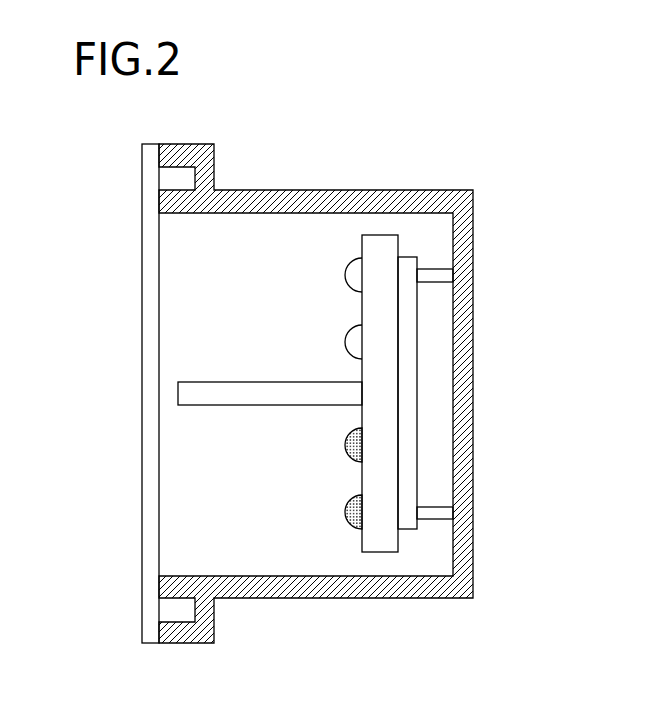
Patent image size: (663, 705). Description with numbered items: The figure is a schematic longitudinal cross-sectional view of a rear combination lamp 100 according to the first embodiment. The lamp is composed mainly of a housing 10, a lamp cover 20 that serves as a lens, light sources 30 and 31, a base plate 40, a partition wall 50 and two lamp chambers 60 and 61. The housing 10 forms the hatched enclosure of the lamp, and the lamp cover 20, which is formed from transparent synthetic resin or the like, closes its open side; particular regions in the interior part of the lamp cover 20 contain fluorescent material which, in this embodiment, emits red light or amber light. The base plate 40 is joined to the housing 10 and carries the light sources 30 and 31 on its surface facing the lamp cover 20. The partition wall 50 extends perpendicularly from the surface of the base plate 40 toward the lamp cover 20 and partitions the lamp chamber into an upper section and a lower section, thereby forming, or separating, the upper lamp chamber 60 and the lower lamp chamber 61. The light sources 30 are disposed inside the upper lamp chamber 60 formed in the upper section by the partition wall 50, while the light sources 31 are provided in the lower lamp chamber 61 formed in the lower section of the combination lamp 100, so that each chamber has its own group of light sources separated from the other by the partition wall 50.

The rear combination lamp 100 is at (338, 393).
The housing 10 is at (473, 247).
The lamp cover 20 is at (141, 300).
The light sources 30 is at (347, 277).
The light sources 31 is at (347, 503).
The base plate 40 is at (380, 388).
The partition wall 50 is at (202, 382).
The upper lamp chamber 60 is at (332, 228).
The lower lamp chamber 61 is at (290, 544).